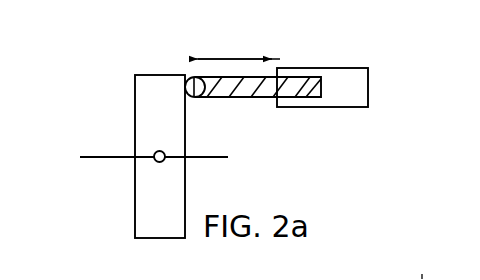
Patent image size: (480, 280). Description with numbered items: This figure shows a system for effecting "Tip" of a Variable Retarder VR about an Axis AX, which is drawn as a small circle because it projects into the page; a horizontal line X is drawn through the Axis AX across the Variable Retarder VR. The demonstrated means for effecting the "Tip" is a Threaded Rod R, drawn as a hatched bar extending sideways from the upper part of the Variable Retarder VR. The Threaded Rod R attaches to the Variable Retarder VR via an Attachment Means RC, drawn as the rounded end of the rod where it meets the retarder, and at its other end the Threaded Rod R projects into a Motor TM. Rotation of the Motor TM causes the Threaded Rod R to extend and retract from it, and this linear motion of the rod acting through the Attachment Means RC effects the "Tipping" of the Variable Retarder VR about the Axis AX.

The Variable Retarder VR is at (105, 158).
The axis line X is at (131, 181).
The Axis AX is at (99, 136).
The Threaded Rod R is at (261, 114).
The Attachment Means RC is at (148, 63).
The Motor TM is at (362, 69).